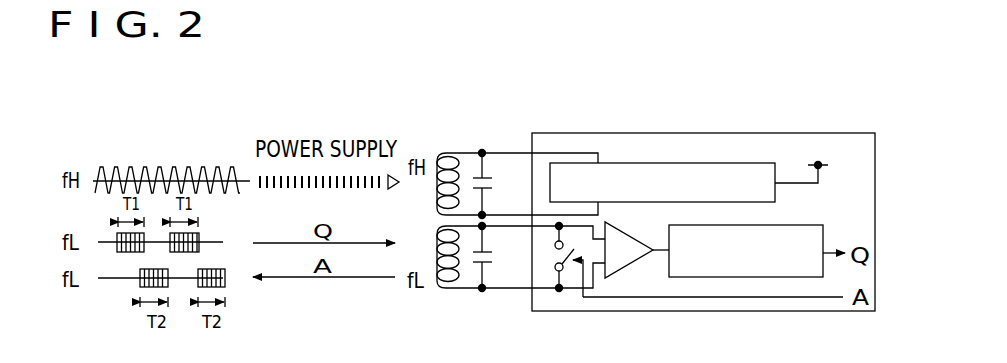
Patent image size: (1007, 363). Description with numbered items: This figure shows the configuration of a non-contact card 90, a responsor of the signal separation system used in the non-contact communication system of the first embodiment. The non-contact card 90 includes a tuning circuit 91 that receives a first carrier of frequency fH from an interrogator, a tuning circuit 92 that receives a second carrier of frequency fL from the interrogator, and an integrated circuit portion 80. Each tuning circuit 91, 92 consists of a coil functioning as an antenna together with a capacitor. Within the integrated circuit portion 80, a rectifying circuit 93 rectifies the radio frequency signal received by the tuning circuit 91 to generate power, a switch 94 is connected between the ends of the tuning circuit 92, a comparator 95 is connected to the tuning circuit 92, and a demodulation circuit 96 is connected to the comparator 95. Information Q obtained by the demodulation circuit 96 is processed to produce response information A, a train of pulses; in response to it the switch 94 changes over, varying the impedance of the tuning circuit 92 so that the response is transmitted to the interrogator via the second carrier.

The integrated circuit portion 80 is at (795, 133).
The non-contact card 90 is at (697, 108).
The tuning circuit 91 is at (458, 160).
The tuning circuit 92 is at (458, 270).
The rectifying circuit 93 is at (683, 163).
The switch 94 is at (550, 258).
The comparator 95 is at (627, 243).
The demodulation circuit 96 is at (782, 225).